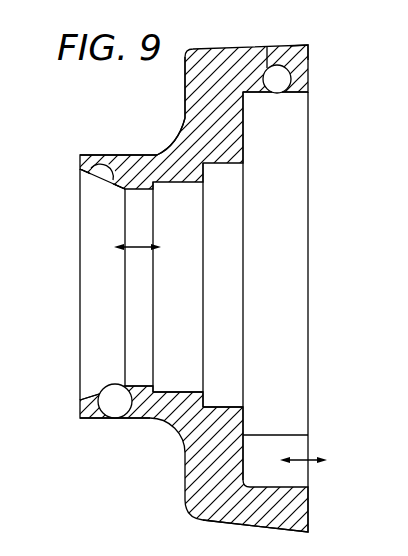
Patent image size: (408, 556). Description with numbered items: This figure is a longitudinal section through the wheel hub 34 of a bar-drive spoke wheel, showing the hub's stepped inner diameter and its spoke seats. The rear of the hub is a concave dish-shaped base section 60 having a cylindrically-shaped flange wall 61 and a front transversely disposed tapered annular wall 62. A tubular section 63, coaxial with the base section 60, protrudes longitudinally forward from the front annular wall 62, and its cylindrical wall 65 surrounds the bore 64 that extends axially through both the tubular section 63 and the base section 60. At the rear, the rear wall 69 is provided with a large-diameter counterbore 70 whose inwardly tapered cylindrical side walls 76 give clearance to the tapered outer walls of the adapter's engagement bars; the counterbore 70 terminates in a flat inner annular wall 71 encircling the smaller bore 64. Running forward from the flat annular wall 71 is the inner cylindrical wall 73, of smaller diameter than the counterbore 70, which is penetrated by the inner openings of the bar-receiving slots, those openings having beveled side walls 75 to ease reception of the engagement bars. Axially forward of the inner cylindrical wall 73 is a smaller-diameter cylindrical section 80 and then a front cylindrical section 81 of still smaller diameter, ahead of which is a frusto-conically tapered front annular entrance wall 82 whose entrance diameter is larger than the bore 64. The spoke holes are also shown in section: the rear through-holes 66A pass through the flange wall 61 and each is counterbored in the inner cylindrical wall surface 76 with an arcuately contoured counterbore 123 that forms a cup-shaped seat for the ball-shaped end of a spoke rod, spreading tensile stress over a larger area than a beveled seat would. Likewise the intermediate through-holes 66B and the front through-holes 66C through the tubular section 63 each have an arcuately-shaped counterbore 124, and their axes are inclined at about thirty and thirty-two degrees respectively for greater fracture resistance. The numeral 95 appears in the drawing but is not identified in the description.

The wheel hub 34 is at (79, 134).
The base section 60 is at (220, 51).
The flange wall 61 is at (308, 46).
The front annular wall 62 is at (183, 82).
The tubular section 63 is at (138, 154).
The bore 64 is at (137, 247).
The cylindrical wall 65 is at (170, 141).
The rear through-holes 66A is at (266, 92).
The intermediate through-holes 66B is at (127, 416).
The front through-holes 66C is at (100, 180).
The rear wall 69 is at (308, 510).
The counterbore 70 is at (323, 463).
The flat inner annular wall 71 is at (308, 435).
The inner cylindrical wall 73 is at (228, 406).
The beveled side walls 75 is at (252, 95).
The inner cylindrical wall surface 76 is at (302, 96).
The cylindrical section 80 is at (186, 393).
The front cylindrical section 81 is at (140, 388).
The front annular entrance wall 82 is at (94, 394).
The corner 95 is at (79, 417).
The counterbore 123 is at (271, 93).
The counterbore 124 is at (80, 170).